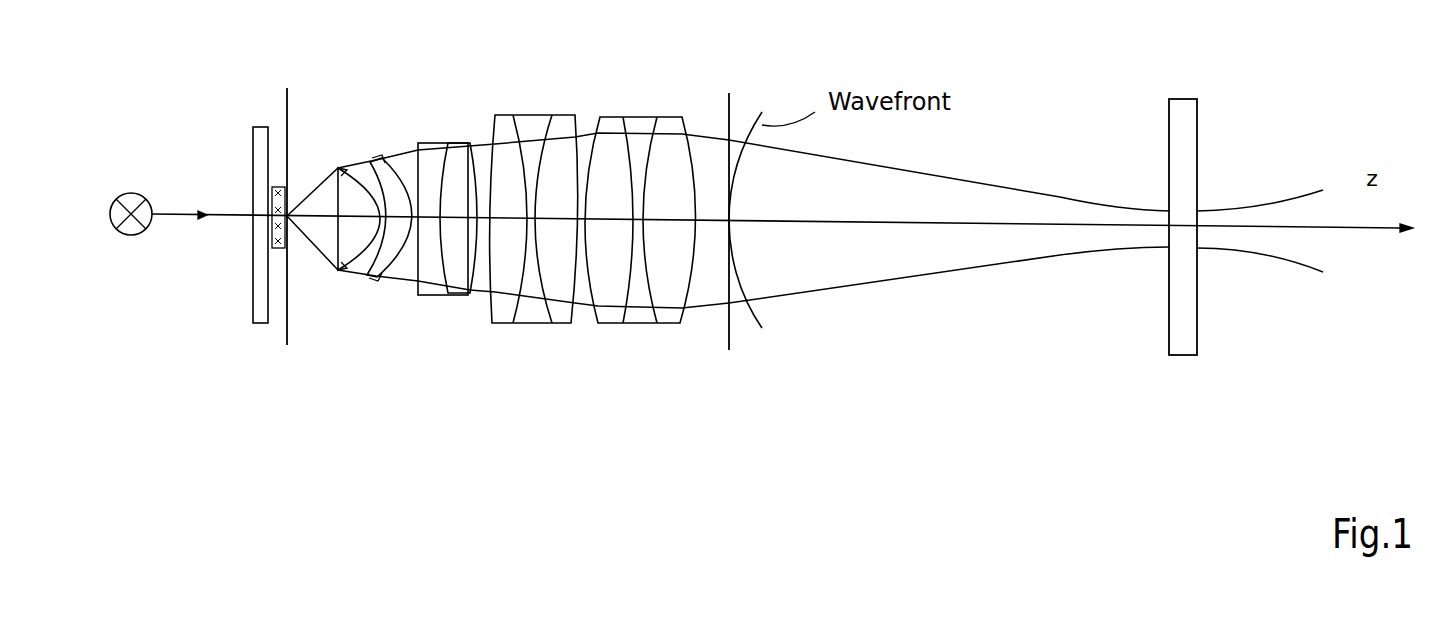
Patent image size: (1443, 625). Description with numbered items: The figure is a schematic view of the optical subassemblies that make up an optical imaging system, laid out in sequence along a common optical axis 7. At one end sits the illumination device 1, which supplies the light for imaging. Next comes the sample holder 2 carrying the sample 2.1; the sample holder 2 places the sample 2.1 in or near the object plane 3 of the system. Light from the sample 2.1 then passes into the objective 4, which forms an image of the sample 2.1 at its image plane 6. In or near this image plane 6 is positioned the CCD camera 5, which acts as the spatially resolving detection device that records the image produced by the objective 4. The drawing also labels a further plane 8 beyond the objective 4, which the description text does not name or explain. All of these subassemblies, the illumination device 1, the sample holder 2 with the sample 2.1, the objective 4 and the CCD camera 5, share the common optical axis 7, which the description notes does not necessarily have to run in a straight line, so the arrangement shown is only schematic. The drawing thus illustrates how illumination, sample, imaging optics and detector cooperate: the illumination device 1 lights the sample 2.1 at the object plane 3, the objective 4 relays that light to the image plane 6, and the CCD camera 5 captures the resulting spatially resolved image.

The illumination device 1 is at (131, 236).
The sample holder 2 is at (250, 130).
The sample 2.1 is at (283, 250).
The object plane 3 is at (293, 110).
The objective 4 is at (695, 358).
The CCD camera 5 is at (1200, 117).
The image plane 6 is at (1168, 120).
The optical axis 7 is at (947, 220).
The aperture stop plane 8 is at (727, 115).